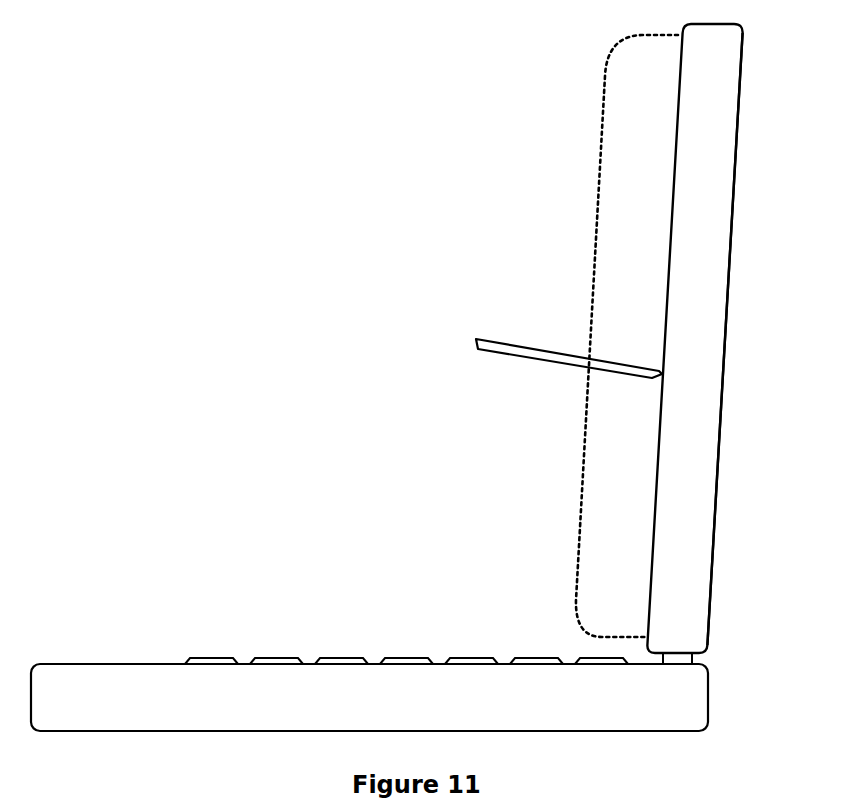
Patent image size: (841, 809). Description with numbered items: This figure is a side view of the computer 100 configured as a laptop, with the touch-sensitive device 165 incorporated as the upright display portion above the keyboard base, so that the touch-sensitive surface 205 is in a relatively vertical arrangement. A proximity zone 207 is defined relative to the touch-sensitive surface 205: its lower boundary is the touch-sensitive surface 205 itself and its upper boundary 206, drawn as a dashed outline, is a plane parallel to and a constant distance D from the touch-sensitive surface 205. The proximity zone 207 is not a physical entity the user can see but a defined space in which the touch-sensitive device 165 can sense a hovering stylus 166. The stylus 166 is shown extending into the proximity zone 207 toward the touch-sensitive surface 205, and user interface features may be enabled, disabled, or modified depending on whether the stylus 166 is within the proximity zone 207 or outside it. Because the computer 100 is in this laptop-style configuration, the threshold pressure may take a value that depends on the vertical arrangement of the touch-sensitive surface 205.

The computer 100 is at (305, 318).
The touch-sensitive device 165 is at (712, 575).
The stylus 166 is at (553, 360).
The touch-sensitive surface 205 is at (667, 280).
The upper boundary 206 is at (597, 215).
The proximity zone 207 is at (658, 163).